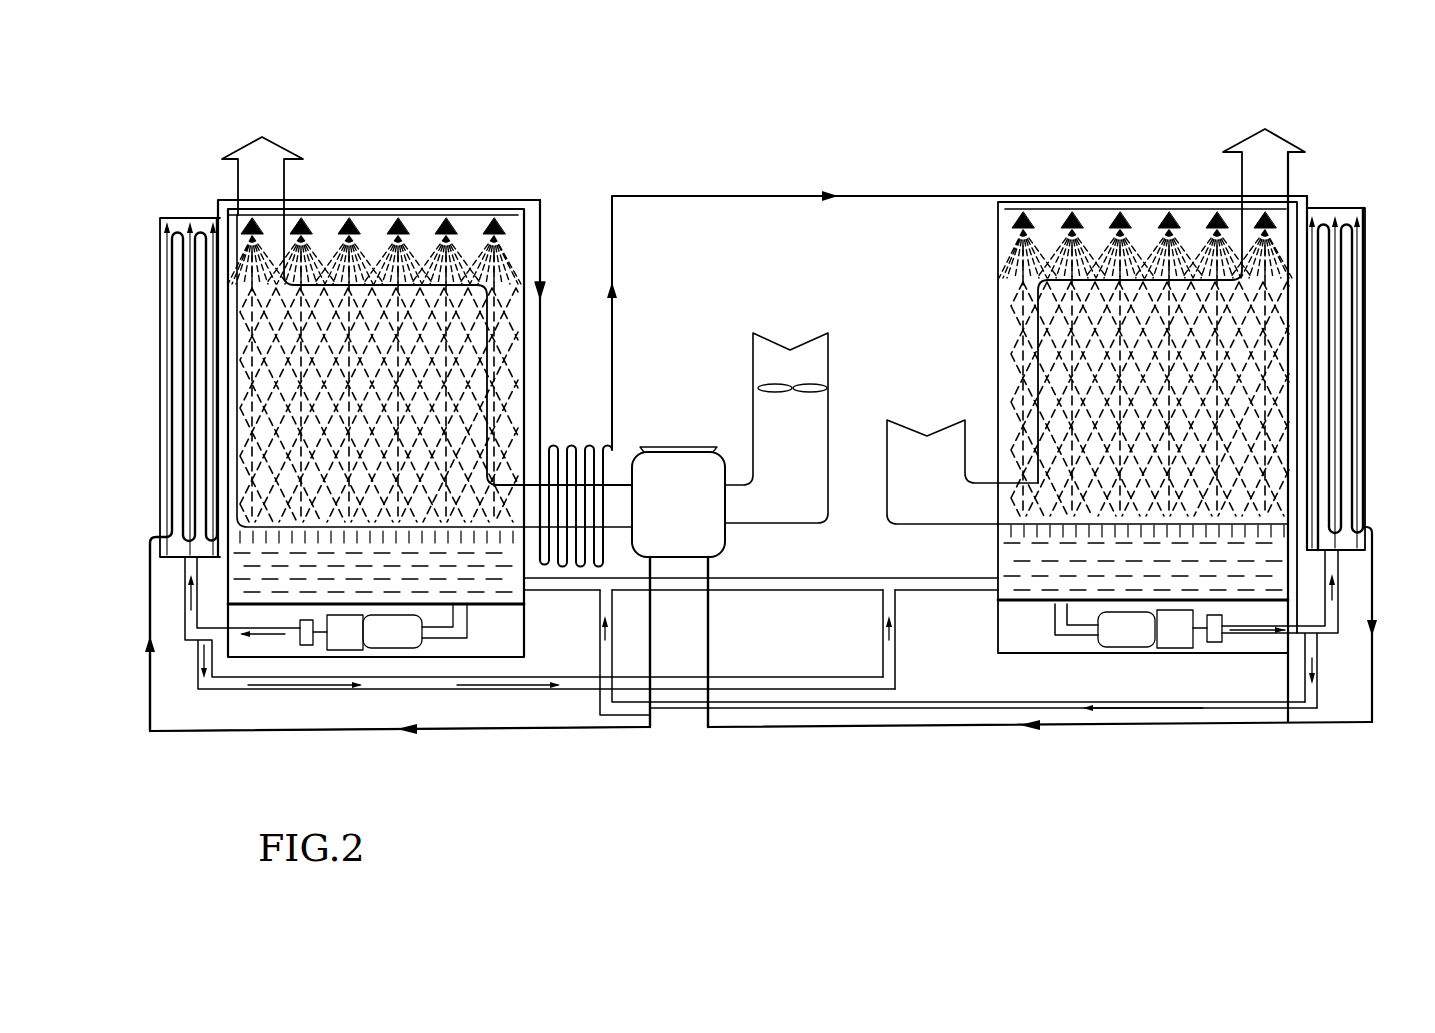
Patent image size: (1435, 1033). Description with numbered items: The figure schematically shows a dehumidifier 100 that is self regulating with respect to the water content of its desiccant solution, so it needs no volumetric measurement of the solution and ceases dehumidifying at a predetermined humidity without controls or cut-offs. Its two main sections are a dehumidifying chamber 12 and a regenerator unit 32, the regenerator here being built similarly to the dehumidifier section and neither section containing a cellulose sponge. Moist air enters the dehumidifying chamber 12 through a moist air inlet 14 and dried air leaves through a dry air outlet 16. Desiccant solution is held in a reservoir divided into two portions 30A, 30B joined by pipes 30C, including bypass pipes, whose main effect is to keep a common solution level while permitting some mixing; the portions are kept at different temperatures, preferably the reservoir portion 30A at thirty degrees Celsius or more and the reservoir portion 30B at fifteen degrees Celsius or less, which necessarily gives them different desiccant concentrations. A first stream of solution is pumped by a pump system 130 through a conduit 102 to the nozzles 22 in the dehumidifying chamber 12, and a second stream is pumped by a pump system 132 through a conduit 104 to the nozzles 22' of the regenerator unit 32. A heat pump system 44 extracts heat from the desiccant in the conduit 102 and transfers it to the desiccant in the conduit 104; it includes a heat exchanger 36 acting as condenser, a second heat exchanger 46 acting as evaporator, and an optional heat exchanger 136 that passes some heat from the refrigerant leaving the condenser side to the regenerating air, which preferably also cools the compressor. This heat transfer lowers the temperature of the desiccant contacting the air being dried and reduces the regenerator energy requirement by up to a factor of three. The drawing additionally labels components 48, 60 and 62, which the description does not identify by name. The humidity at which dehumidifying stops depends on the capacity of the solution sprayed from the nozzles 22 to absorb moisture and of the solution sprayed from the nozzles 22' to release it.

The dehumidifying chamber 12 is at (1000, 295).
The moist air inlet 14 is at (965, 437).
The dry air outlet 16 is at (1275, 135).
The nozzles 22 is at (1145, 343).
The nozzles 22' is at (378, 343).
The reservoir portion 30A is at (528, 600).
The reservoir portion 30B is at (997, 560).
The pipes 30C is at (823, 588).
The regenerator unit 32 is at (528, 230).
The heat exchanger 36 is at (182, 250).
The heat pump system 44 is at (684, 748).
The second heat exchanger 46 is at (1345, 235).
The pump 48 is at (727, 530).
The fan 60 is at (753, 367).
The exhaust air stream 62 is at (277, 142).
The dehumidifier 100 is at (1004, 780).
The conduit 102 is at (1363, 280).
The conduit 104 is at (162, 330).
The pump system 130 is at (1127, 634).
The pump system 132 is at (412, 645).
The heat exchanger 136 is at (551, 443).